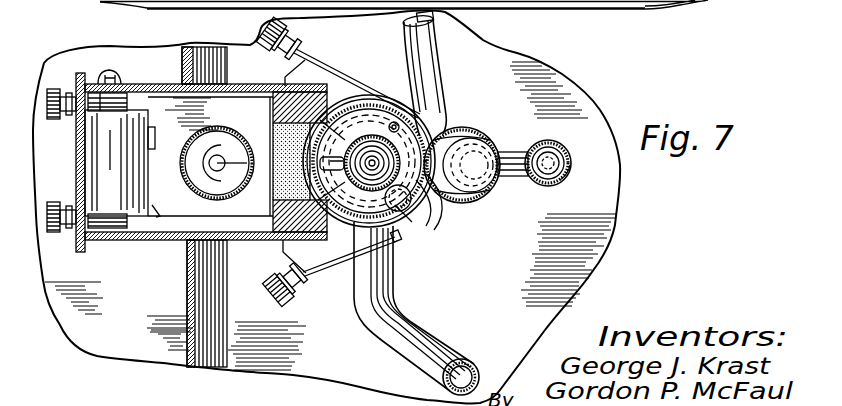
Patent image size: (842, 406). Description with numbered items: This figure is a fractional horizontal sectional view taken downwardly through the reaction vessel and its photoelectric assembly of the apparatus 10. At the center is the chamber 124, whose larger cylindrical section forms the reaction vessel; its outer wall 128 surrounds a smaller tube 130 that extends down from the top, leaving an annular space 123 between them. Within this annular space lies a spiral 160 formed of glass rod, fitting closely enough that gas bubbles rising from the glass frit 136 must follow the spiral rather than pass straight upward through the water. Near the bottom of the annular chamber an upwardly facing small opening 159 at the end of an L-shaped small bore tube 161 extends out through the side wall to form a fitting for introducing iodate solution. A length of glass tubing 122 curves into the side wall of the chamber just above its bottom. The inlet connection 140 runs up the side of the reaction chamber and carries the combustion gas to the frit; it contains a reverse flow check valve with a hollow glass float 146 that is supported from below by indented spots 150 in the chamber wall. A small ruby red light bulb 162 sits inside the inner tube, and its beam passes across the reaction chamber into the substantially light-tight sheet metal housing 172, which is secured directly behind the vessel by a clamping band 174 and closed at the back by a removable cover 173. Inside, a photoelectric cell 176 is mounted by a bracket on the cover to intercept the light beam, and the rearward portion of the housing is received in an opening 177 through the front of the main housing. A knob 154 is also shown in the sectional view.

The apparatus (adjacent figure) 10 is at (262, 0).
The glass tubing 122 is at (473, 361).
The annular space 123 is at (387, 238).
The chamber 124 is at (400, 231).
The wall 128 is at (420, 224).
The tube 130 is at (418, 122).
The glass frit 136 is at (272, 128).
The inlet connection 140 is at (558, 152).
The hollow glass float 146 is at (546, 150).
The indented spots 150 is at (566, 180).
The spherical body 154 is at (488, 185).
The upwardly facing small opening 159 is at (393, 121).
The spiral 160 is at (394, 262).
The L-shaped small bore tube 161 is at (441, 63).
The ruby red light bulb 162 is at (277, 190).
The sheet metal housing 172 is at (120, 242).
The removable cover 173 is at (77, 151).
The clamping band 174 is at (307, 52).
The photoelectric cell 176 is at (217, 200).
The opening 177 is at (178, 241).